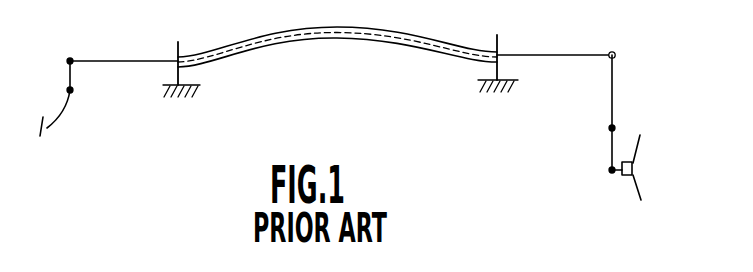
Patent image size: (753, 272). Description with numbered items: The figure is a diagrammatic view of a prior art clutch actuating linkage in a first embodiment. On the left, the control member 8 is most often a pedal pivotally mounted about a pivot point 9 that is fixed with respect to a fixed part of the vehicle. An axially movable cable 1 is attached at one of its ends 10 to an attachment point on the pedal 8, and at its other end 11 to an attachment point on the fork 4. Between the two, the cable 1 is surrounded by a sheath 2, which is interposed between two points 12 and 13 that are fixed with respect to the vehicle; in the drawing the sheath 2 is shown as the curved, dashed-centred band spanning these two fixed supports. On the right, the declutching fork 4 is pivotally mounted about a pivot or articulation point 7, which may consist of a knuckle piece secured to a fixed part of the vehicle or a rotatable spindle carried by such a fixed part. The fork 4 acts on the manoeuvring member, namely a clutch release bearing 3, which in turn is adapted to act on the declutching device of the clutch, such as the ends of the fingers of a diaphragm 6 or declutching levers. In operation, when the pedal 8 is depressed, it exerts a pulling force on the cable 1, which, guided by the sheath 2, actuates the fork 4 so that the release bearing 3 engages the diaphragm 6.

The cable 1 is at (132, 63).
The sheath 2 is at (307, 44).
The clutch release bearing 3 is at (622, 177).
The fork 4 is at (608, 88).
The diaphragm 6 is at (640, 195).
The pivot or articulation point 7 is at (609, 129).
The control member 8 is at (57, 125).
The pivot point 9 is at (72, 91).
The cable end 10 is at (69, 57).
The cable end 11 is at (613, 51).
The fixed point 12 is at (183, 74).
The fixed point 13 is at (497, 69).